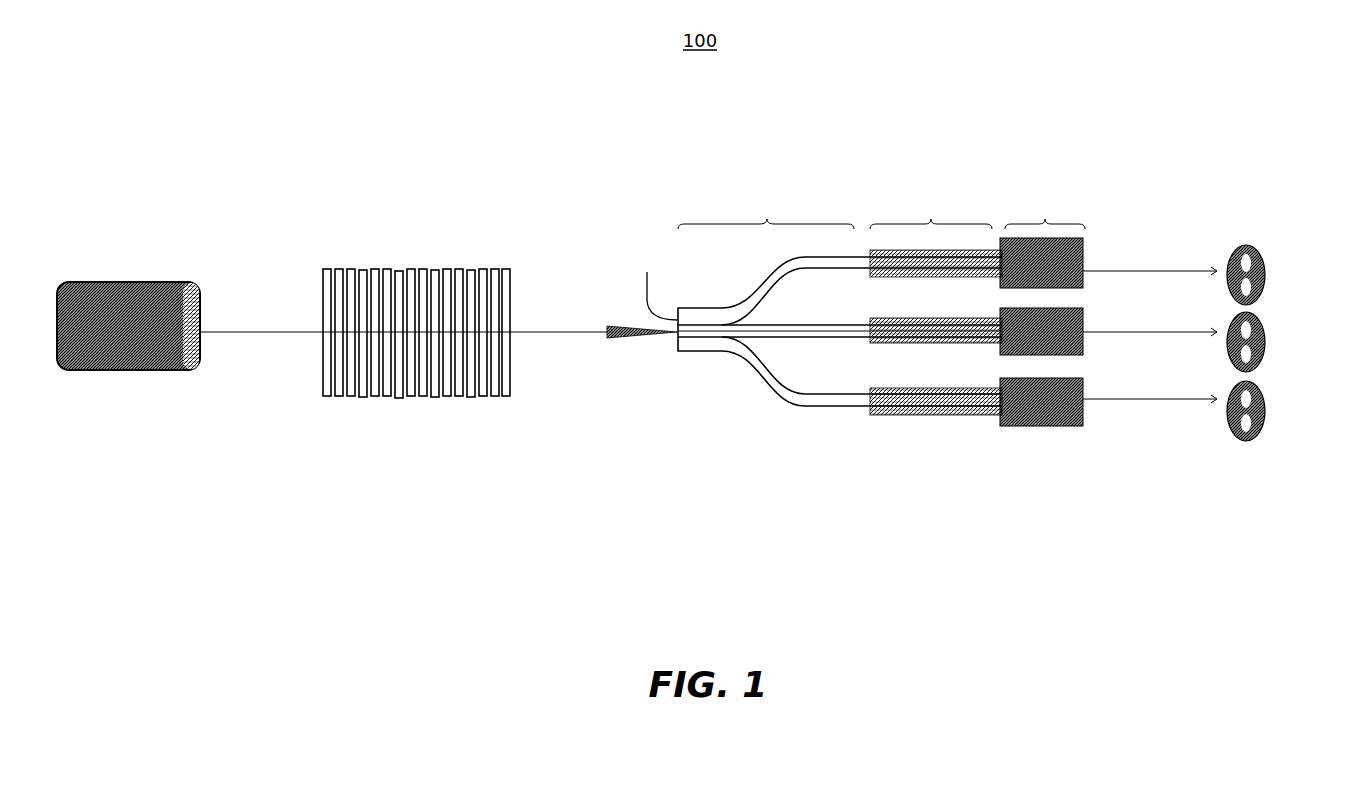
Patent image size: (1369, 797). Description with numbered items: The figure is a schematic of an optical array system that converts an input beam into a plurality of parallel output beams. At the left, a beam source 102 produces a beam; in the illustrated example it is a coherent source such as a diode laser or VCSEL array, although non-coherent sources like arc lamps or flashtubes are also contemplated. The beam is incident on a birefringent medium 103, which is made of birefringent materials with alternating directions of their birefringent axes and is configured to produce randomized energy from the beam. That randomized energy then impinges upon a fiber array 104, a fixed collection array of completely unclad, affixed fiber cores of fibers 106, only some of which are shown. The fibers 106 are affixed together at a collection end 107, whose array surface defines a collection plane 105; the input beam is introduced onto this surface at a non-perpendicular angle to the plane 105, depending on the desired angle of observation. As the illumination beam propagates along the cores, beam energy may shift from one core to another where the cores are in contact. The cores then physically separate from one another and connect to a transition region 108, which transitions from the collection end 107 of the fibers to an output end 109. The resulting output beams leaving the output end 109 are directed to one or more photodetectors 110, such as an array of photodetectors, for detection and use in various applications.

The beam source 102 is at (128, 282).
The birefringent medium 103 is at (418, 268).
The fiber array 104 is at (692, 392).
The collection plane 105 is at (648, 282).
The fibers 106 is at (744, 285).
The collection end 107 is at (766, 207).
The transition region 108 is at (936, 300).
The output end 109 is at (1042, 306).
The photodetectors 110 is at (1252, 245).